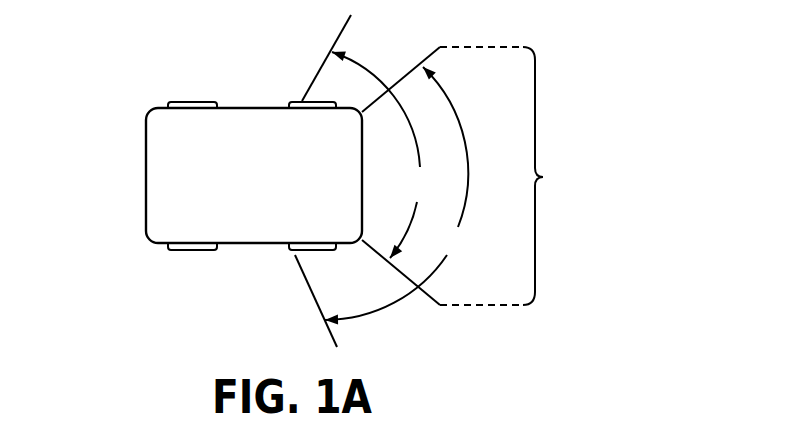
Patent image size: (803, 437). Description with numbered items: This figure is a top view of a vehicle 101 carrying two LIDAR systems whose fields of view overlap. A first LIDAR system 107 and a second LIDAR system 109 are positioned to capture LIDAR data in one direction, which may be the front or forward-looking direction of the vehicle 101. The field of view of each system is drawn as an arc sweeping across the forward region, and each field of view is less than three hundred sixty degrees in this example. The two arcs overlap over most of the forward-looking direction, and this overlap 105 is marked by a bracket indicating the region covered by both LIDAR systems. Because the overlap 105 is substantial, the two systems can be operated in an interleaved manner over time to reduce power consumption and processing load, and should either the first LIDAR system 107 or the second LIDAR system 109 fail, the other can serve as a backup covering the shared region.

The vehicle 101 is at (146, 171).
The overlap 105 is at (658, 152).
The first LIDAR system 107 is at (433, 176).
The second LIDAR system 109 is at (468, 240).